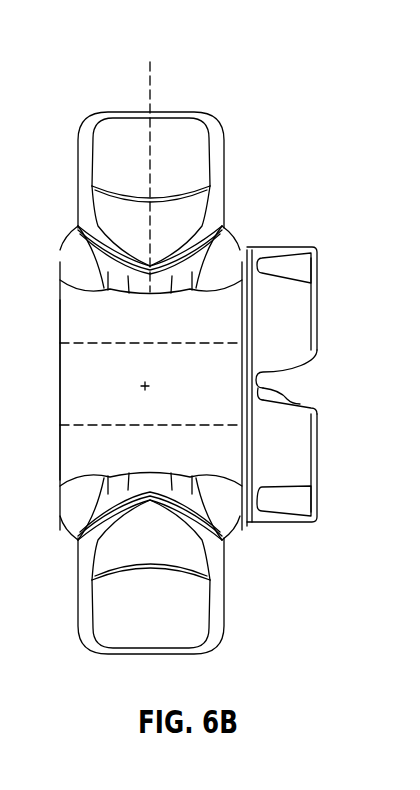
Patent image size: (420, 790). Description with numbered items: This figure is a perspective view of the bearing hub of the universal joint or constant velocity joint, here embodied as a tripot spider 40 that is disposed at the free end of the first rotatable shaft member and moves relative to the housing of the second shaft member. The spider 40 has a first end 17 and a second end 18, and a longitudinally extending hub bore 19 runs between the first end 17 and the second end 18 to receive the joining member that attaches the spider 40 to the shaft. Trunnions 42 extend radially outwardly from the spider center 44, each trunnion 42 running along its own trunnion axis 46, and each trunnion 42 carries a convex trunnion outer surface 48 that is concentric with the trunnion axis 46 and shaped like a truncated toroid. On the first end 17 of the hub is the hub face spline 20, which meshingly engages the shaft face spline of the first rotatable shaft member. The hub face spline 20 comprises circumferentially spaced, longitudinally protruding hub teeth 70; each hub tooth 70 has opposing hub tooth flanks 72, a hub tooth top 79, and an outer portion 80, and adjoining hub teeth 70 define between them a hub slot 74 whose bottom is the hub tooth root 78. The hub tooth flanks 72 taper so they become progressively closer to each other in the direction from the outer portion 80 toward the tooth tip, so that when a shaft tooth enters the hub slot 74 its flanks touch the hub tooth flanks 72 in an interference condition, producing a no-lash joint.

The spider 40 is at (301, 74).
The trunnion 42 is at (185, 108).
The trunnion axis 46 is at (156, 62).
The trunnion outer surface 48 is at (226, 196).
The first end 17 is at (242, 470).
The second end 18 is at (60, 476).
The hub bore 19 is at (95, 343).
The spider center 44 is at (148, 385).
The hub face spline 20 is at (285, 560).
The hub tooth 70 is at (292, 530).
The hub tooth flank 72 is at (302, 362).
The hub slot 74 is at (284, 403).
The hub tooth root 78 is at (288, 397).
The hub tooth top 79 is at (318, 347).
The outer portion 80 is at (295, 314).